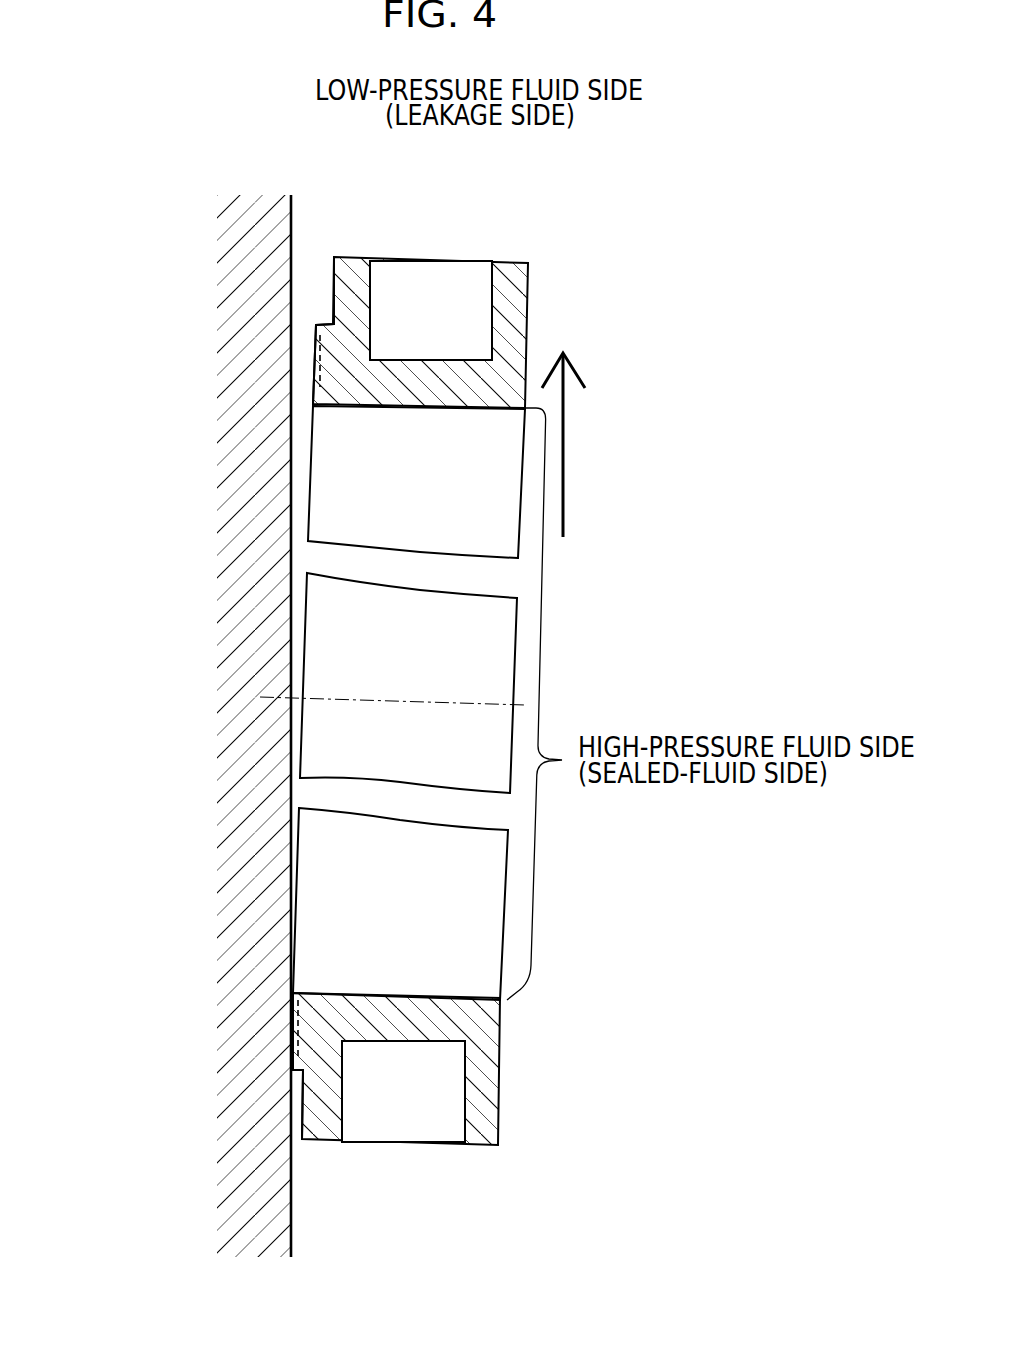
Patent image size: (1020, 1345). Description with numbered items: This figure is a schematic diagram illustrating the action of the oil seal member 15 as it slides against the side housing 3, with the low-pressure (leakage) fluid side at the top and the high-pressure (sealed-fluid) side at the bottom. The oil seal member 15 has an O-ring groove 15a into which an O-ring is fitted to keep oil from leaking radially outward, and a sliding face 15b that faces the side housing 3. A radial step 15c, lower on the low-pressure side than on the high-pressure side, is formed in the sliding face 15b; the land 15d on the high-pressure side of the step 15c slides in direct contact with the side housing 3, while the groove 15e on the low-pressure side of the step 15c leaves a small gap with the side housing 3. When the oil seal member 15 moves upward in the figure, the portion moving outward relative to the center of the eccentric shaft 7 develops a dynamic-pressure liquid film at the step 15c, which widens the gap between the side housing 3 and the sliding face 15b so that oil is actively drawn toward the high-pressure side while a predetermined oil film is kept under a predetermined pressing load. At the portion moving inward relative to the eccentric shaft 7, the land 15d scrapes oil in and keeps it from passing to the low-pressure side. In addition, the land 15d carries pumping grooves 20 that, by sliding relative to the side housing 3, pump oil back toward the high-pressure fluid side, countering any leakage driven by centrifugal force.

The side housing 3 is at (228, 503).
The eccentric shaft 7 is at (473, 702).
The oil seal member 15 is at (522, 262).
The O-ring groove 15a is at (490, 343).
The sliding face 15b is at (147, 172).
The radial step 15c is at (333, 302).
The land 15d is at (313, 366).
The groove 15e is at (328, 288).
The pumping grooves 20 is at (370, 398).